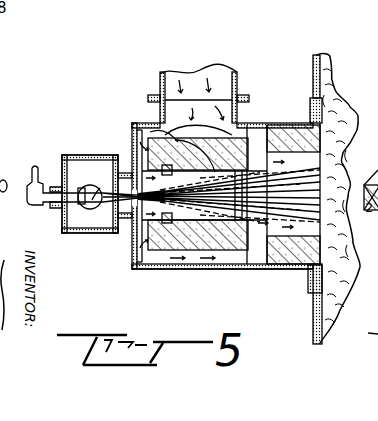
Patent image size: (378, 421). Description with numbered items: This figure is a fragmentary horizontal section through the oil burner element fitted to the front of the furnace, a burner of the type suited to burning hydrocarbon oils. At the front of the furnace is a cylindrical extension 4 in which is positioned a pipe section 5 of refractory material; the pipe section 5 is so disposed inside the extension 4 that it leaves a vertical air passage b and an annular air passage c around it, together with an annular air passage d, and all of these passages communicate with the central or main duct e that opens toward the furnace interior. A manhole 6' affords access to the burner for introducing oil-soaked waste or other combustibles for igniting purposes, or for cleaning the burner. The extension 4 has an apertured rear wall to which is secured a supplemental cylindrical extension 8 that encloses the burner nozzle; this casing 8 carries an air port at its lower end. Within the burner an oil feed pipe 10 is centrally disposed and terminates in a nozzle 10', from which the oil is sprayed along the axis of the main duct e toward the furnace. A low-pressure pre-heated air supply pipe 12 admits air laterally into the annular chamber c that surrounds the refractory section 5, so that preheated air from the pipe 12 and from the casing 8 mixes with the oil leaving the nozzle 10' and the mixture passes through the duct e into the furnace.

The cylindrical extension 4 is at (175, 268).
The pipe section 5 is at (140, 153).
The manhole 6' is at (229, 236).
The supplemental cylindrical extension 8 is at (83, 235).
The oil feed pipe 10 is at (69, 185).
The nozzle 10' is at (66, 212).
The low pressure pre-heated air supply pipe 12 is at (160, 80).
The vertical air passage b is at (140, 160).
The annular air passage c is at (297, 265).
The annular air passage d is at (168, 267).
The central or main duct e is at (163, 138).